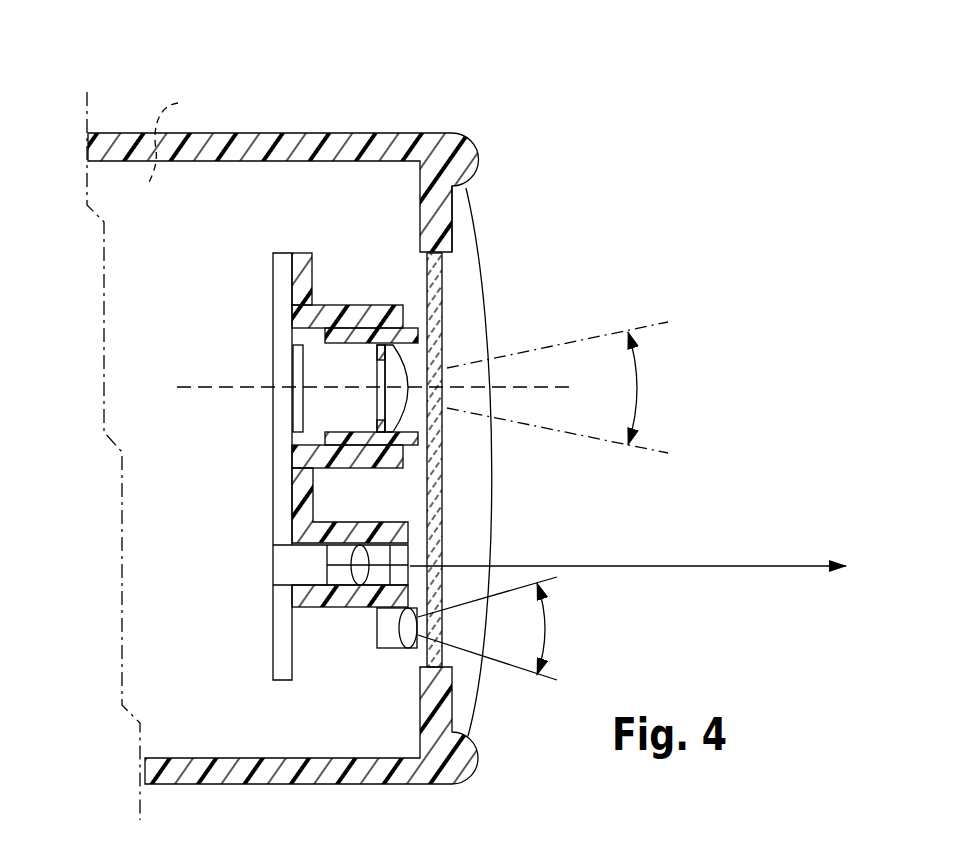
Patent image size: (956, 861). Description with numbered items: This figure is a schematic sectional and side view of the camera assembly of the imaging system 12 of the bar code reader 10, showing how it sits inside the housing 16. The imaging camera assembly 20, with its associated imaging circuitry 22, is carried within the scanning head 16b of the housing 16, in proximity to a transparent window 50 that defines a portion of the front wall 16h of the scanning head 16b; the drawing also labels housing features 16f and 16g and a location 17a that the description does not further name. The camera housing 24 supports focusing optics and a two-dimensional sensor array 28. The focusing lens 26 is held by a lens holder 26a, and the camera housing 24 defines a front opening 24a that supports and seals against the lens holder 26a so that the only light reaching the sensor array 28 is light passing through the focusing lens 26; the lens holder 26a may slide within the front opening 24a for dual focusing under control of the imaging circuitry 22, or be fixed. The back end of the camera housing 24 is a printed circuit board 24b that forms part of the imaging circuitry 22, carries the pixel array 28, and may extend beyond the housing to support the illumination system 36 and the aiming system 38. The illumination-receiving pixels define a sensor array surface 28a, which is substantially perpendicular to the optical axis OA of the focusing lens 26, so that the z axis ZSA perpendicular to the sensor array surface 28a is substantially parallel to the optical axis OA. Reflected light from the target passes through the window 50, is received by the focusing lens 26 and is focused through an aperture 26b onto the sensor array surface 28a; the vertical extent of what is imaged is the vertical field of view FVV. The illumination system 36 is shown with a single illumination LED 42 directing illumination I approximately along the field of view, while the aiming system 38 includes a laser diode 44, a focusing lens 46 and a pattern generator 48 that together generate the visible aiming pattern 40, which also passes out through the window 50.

The bar code reader 10 is at (315, 415).
The imaging system 12 is at (137, 358).
The housing 16 is at (339, 415).
The scanning head 16b is at (290, 133).
The rounded housing corner 16f is at (478, 158).
The lens outer surface 16g is at (496, 470).
The front wall 16h is at (455, 211).
The mounting opening 17a is at (185, 136).
The imaging camera assembly 20 is at (262, 290).
The imaging circuitry 22 is at (262, 345).
The camera housing 24 is at (377, 392).
The front opening 24a is at (423, 340).
The printed circuit board 24b is at (287, 502).
The focusing lens 26 is at (342, 411).
The lens holder 26a is at (388, 430).
The aperture 26b is at (375, 412).
The sensor array 28 is at (295, 407).
The sensor array surface 28a is at (303, 387).
The illumination system 36 is at (377, 661).
The aiming system 38 is at (291, 546).
The aiming pattern 40 is at (760, 568).
The illumination LED 42 is at (390, 632).
The laser diode 44 is at (305, 563).
The focusing lens 46 is at (360, 555).
The pattern generator 48 is at (404, 558).
The transparent window 50 is at (443, 520).
The optical axis OA is at (553, 387).
The z axis of sensor array ZSA is at (187, 392).
The vertical field of view FVV is at (639, 388).
The illumination direction I is at (489, 628).